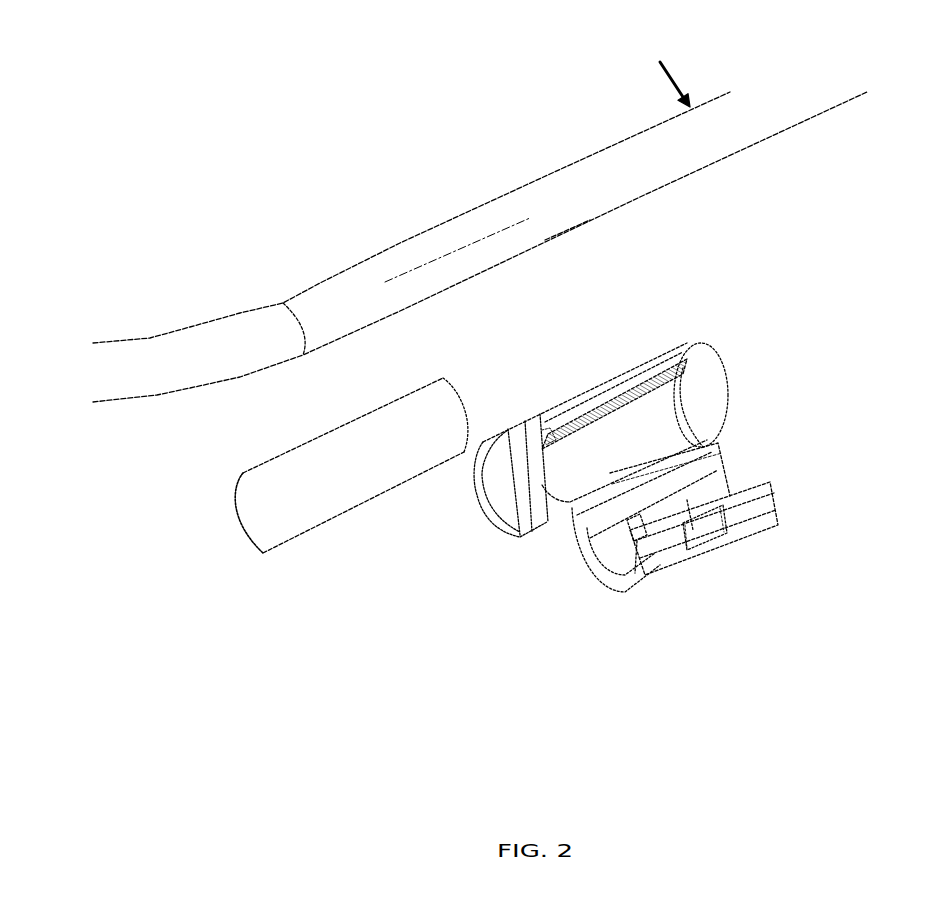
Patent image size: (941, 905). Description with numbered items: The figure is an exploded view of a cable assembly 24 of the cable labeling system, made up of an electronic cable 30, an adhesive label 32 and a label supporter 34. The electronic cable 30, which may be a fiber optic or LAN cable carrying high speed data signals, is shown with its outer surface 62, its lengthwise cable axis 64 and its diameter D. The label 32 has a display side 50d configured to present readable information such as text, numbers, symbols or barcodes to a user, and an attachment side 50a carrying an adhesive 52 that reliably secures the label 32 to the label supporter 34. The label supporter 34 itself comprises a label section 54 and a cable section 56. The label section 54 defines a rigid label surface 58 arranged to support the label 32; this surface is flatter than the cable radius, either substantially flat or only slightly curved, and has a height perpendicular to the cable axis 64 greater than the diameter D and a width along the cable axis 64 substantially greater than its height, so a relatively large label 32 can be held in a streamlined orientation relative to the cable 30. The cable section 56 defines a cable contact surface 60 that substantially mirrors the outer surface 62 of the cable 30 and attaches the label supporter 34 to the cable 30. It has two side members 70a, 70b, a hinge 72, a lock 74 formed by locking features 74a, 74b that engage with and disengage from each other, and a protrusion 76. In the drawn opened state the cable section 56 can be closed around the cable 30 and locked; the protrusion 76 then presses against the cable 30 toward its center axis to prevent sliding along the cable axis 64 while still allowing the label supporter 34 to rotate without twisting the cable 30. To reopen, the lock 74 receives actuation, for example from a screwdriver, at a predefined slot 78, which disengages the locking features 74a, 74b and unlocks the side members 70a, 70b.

The cable assembly 24 is at (130, 100).
The electronic cable 30 is at (593, 211).
The outer surface 62 is at (562, 228).
The cable axis 64 is at (478, 243).
The diameter D is at (722, 171).
The adhesive 52 is at (345, 489).
The attachment side 50a is at (372, 476).
The display side 50d is at (210, 498).
The adhesive label 32 is at (263, 532).
The cable section 56 is at (681, 490).
The label section 54 is at (480, 563).
The rigid label surface 58 is at (535, 393).
The locking feature 74a is at (678, 376).
The lock 74 is at (805, 318).
The cable contact surface 60 is at (629, 450).
The side member 70a is at (557, 512).
The side member 70b is at (622, 576).
The hinge 72 is at (690, 462).
The protrusion 76 is at (642, 530).
The locking feature 74b is at (740, 501).
The slot 78 is at (705, 540).
The label supporter 34 is at (838, 480).